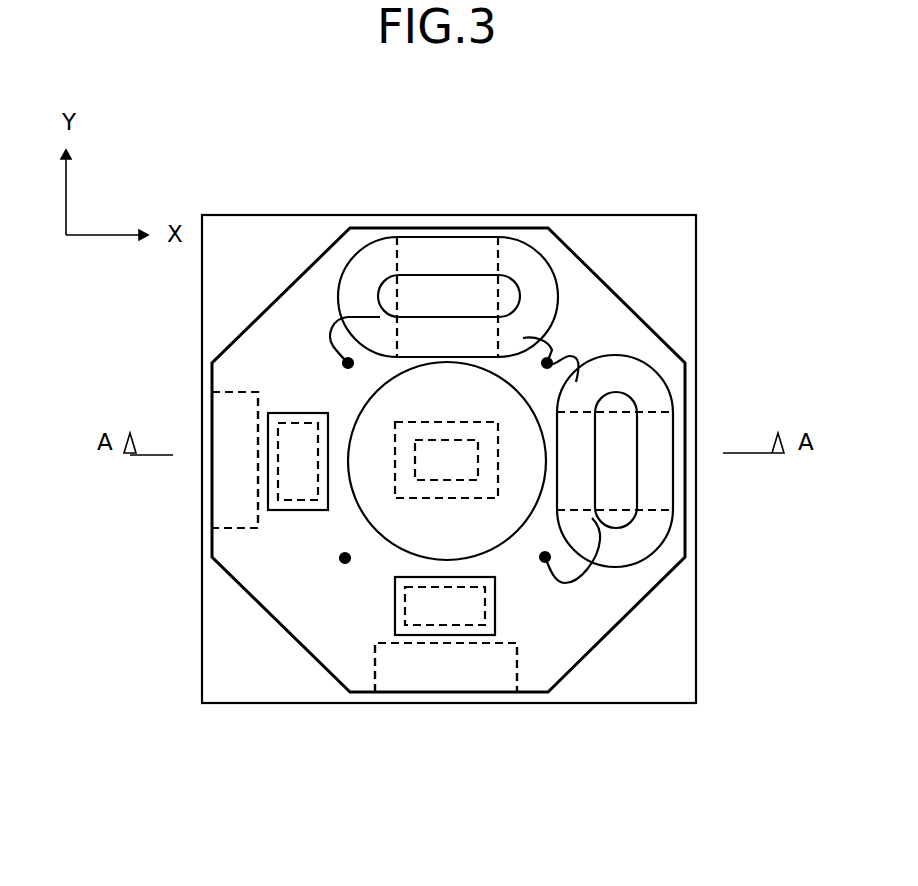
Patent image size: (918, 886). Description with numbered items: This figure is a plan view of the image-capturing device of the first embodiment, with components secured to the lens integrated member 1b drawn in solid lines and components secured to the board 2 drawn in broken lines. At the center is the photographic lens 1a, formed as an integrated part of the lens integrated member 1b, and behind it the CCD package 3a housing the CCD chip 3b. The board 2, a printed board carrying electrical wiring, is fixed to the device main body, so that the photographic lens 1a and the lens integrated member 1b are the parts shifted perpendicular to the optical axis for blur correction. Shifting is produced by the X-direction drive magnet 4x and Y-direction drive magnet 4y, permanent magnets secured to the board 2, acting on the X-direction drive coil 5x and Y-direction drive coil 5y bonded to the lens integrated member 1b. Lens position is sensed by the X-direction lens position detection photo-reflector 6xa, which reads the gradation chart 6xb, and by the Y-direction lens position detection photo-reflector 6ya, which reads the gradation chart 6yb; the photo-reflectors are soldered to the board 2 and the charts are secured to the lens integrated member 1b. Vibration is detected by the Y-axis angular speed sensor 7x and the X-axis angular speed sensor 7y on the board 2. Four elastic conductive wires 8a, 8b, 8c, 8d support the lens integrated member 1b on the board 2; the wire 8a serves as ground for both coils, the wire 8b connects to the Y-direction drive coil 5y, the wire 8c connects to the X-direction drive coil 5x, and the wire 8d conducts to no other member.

The photographic lens 1a is at (393, 530).
The lens integrated member 1b is at (597, 297).
The board 2 is at (662, 651).
The CCD package 3a is at (405, 492).
The CCD chip 3b is at (428, 465).
The X-direction drive magnet 4x is at (627, 480).
The Y-direction drive magnet 4y is at (465, 288).
The X-direction drive coil 5x is at (658, 437).
The Y-direction drive coil 5y is at (538, 267).
The X-direction lens position detection photo-reflector 6xa is at (280, 470).
The gradation chart 6xb is at (262, 420).
The Y-direction lens position detection photo-reflector 6ya is at (430, 617).
The gradation chart 6yb is at (490, 632).
The Y-axis angular speed sensor 7x is at (230, 508).
The X-axis angular speed sensor 7y is at (423, 680).
The wire 8a is at (558, 357).
The wire 8b is at (343, 364).
The wire 8c is at (545, 557).
The wire 8d is at (345, 558).